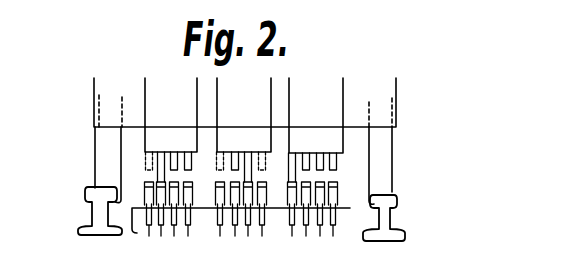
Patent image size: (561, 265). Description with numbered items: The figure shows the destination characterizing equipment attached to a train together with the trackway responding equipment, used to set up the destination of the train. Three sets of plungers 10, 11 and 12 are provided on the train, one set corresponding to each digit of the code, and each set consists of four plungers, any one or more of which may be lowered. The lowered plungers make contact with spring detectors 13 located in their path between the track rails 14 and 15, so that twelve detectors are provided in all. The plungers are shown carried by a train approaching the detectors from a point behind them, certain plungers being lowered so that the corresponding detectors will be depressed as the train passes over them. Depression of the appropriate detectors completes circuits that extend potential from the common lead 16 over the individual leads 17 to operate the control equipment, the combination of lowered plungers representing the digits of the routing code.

The set of plungers 10 is at (160, 88).
The set of plungers 11 is at (228, 103).
The set of plungers 12 is at (333, 100).
The spring detectors 13 is at (338, 193).
The track rail 14 is at (90, 201).
The track rail 15 is at (395, 204).
The common lead 16 is at (136, 233).
The individual leads 17 is at (288, 233).